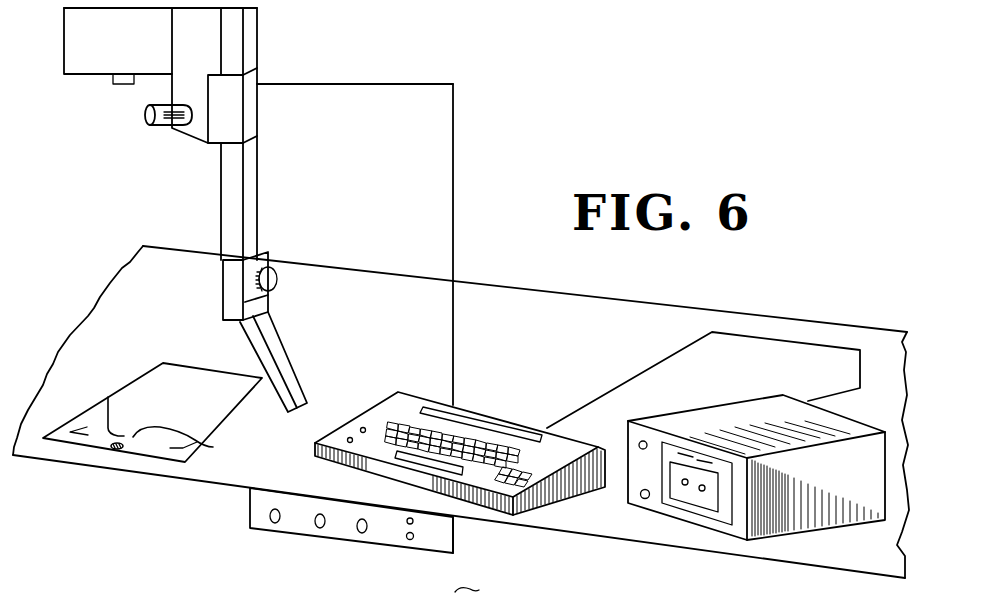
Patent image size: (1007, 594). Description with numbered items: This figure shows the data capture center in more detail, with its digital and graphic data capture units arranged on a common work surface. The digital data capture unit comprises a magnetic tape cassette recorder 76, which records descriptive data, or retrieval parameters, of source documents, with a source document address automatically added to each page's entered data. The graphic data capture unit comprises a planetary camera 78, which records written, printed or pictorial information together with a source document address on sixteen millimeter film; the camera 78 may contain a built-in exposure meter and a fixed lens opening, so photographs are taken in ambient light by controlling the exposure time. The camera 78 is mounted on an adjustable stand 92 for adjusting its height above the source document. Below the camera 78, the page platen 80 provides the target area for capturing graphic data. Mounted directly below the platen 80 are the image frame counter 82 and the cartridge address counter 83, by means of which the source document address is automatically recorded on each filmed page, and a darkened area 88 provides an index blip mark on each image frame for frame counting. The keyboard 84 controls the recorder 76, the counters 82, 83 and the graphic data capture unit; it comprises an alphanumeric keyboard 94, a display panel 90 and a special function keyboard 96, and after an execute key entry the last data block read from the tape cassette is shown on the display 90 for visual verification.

The magnetic tape cassette recorder 76 is at (855, 457).
The planetary camera 78 is at (105, 48).
The page platen 80 is at (153, 388).
The image frame counter 82 is at (214, 447).
The cartridge address counter 83 is at (108, 397).
The keyboard 84 is at (360, 412).
The darkened area 88 is at (114, 450).
The display panel 90 is at (490, 427).
The adjustable stand 92 is at (262, 259).
The alphanumeric keyboard 94 is at (400, 428).
The special function keyboard 96 is at (540, 476).